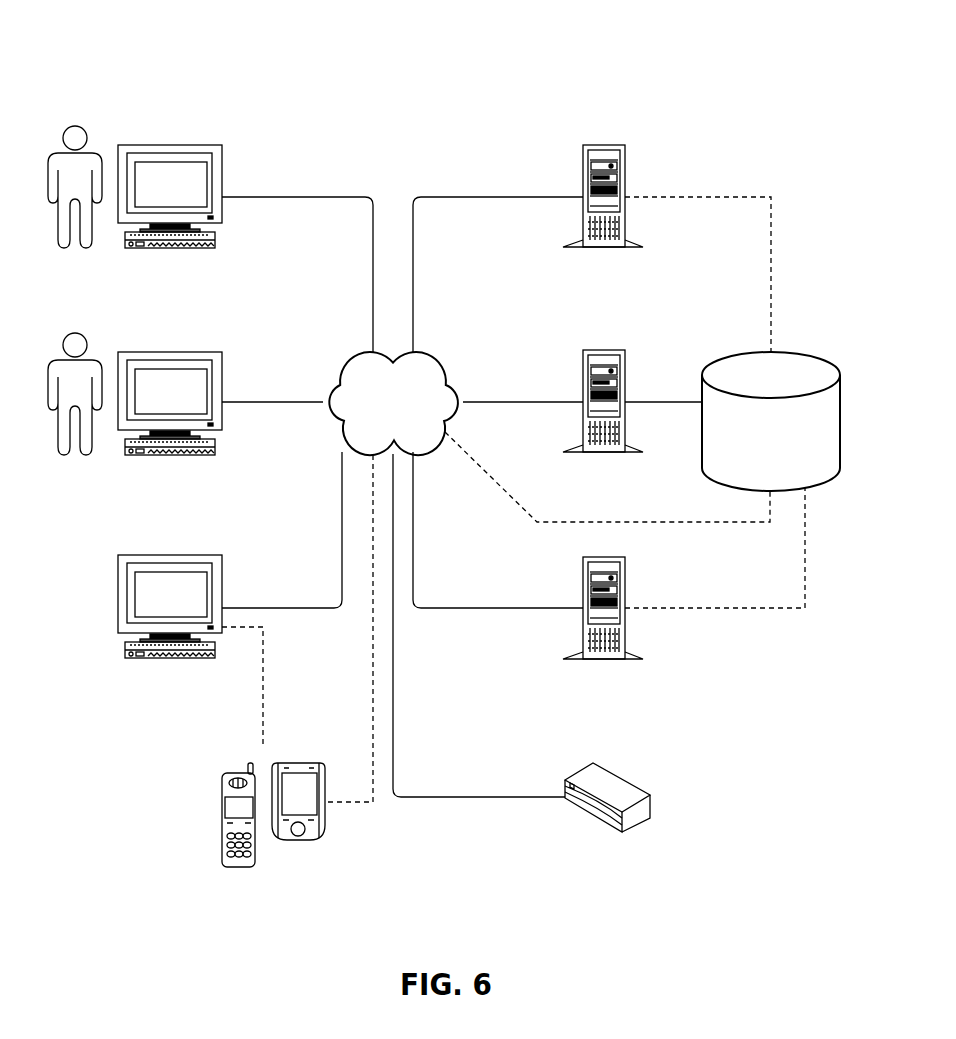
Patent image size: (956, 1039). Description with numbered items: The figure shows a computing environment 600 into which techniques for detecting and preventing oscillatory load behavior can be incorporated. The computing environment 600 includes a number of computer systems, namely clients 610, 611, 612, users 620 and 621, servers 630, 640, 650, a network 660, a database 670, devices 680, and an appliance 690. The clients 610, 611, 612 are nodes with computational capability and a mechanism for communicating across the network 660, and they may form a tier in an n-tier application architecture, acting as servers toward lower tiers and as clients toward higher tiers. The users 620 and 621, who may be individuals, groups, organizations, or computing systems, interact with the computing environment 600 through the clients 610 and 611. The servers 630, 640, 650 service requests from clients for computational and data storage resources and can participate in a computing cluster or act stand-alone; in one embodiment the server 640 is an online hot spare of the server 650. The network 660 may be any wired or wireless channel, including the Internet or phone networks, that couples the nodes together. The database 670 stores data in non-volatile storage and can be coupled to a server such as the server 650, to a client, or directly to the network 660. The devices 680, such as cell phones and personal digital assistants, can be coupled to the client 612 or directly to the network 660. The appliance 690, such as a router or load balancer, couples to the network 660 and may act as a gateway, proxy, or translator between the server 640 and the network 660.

The computing environment 600 is at (444, 490).
The client 610 is at (241, 219).
The client 611 is at (220, 426).
The client 612 is at (230, 600).
The user 620 is at (75, 211).
The user 621 is at (75, 418).
The server 630 is at (667, 248).
The server 640 is at (684, 597).
The server 650 is at (632, 425).
The network 660 is at (547, 499).
The database 670 is at (771, 421).
The devices 680 is at (273, 847).
The appliance 690 is at (607, 822).